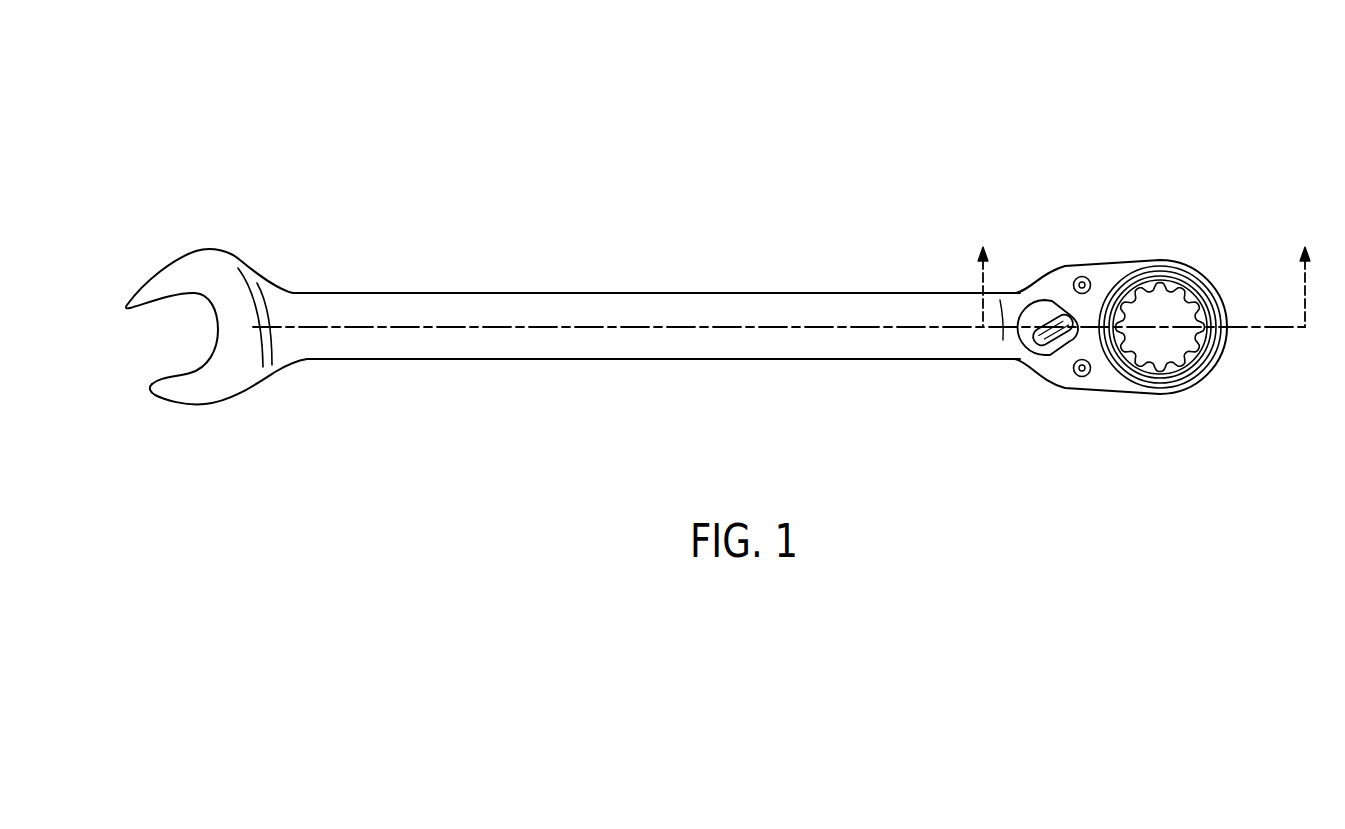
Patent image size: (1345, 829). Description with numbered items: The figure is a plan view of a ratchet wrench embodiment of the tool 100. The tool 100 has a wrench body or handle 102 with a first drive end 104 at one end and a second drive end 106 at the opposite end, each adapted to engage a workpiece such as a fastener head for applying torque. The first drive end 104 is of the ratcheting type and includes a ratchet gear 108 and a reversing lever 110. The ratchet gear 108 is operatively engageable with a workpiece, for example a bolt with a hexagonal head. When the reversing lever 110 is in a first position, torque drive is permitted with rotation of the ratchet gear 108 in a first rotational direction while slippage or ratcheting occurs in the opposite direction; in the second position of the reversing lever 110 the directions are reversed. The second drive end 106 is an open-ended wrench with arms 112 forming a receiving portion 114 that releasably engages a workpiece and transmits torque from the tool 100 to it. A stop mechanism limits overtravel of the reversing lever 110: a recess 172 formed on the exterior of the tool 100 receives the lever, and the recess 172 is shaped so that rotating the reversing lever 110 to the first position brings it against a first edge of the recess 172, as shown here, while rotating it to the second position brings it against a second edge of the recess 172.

The tool 100 is at (828, 77).
The handle 102 is at (840, 292).
The first drive end 104 is at (1132, 260).
The second drive end 106 is at (235, 257).
The ratchet gear 108 is at (1177, 377).
The reversing lever 110 is at (1043, 355).
The arms 112 is at (160, 267).
The receiving portion 114 is at (217, 343).
The recess 172 is at (1038, 302).